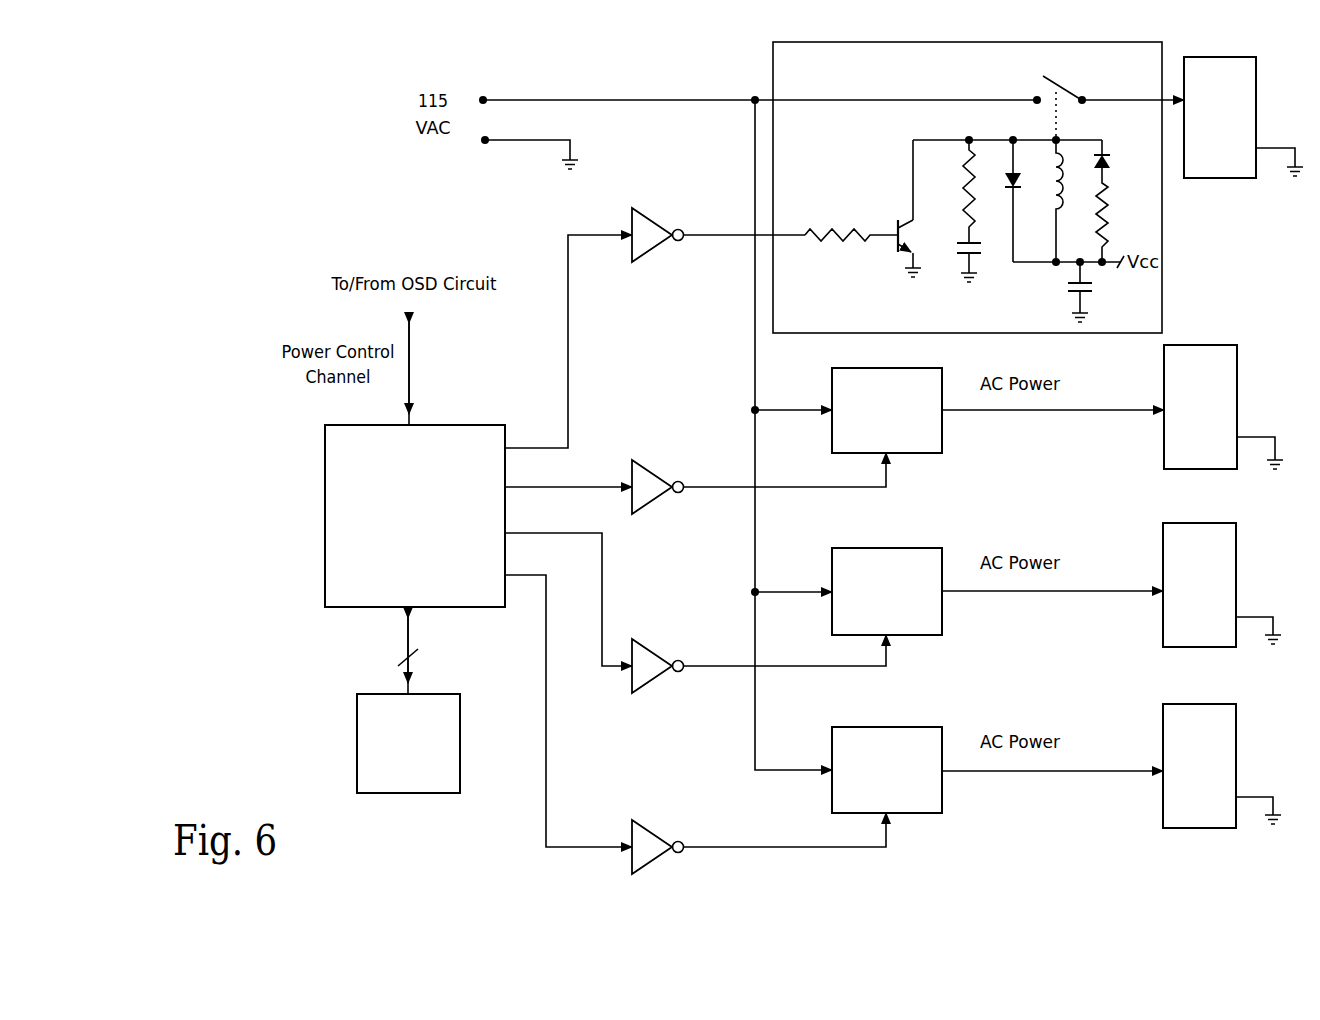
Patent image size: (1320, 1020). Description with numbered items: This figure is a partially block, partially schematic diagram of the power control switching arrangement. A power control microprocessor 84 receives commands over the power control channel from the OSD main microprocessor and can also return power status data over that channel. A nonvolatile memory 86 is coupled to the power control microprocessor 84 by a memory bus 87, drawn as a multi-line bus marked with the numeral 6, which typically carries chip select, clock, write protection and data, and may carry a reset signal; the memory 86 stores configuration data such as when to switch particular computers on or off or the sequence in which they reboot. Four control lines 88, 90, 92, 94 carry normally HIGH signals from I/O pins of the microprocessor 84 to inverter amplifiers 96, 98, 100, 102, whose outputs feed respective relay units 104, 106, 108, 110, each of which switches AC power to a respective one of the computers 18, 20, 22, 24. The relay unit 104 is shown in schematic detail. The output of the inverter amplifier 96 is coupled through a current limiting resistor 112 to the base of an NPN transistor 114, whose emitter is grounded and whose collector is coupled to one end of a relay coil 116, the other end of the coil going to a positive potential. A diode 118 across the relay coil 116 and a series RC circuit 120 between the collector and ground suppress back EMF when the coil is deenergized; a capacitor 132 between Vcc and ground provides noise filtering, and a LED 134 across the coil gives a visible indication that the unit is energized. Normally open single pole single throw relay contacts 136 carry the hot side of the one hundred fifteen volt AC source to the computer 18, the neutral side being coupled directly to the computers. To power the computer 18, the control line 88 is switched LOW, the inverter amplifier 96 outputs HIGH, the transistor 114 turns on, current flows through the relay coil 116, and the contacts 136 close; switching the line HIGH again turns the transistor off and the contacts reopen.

The computer 18 is at (1258, 106).
The computer 20 is at (1164, 372).
The computer 22 is at (1163, 535).
The computer 24 is at (1163, 719).
The power control microprocessor 84 is at (325, 452).
The nonvolatile memory 86 is at (357, 745).
The memory bus 87 is at (403, 638).
The bus width indicator 6 is at (416, 661).
The control line 88 is at (571, 361).
The control line 90 is at (543, 486).
The control line 92 is at (604, 575).
The control line 94 is at (547, 756).
The inverter amplifier 96 is at (656, 216).
The inverter amplifier 98 is at (656, 470).
The inverter amplifier 100 is at (661, 654).
The inverter amplifier 102 is at (659, 835).
The relay unit 104 is at (845, 336).
The relay unit 106 is at (832, 430).
The relay unit 108 is at (832, 613).
The relay unit 110 is at (832, 791).
The current limiting resistor 112 is at (806, 233).
The NPN transistor 114 is at (897, 250).
The relay coil 116 is at (1054, 194).
The diode 118 is at (1003, 186).
The series RC circuit 120 is at (957, 234).
The capacitor 132 is at (1092, 287).
The LED 134 is at (1110, 157).
The relay contacts 136 is at (1076, 88).